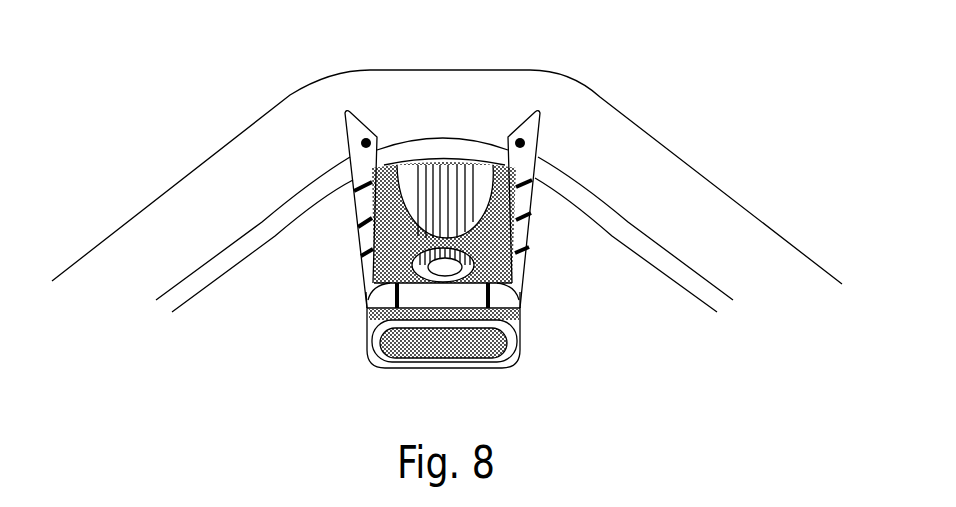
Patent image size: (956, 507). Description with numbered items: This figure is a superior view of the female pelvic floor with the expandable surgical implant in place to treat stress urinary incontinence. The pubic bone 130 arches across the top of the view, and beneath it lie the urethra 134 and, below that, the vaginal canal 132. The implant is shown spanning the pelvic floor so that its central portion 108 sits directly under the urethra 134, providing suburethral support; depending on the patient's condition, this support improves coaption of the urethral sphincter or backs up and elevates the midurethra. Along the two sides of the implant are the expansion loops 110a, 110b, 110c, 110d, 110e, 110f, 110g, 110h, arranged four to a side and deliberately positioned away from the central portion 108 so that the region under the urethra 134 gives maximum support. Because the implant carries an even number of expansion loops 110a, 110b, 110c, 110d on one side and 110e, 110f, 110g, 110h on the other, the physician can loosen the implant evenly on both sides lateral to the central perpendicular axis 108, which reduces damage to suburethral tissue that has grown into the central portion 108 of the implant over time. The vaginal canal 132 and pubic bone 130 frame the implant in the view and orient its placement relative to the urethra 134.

The pubic bone 130 is at (359, 88).
The central portion 108 is at (462, 306).
The urethra 134 is at (437, 271).
The vaginal canal 132 is at (458, 358).
The expansion loop 110a is at (355, 196).
The expansion loop 110b is at (358, 227).
The expansion loop 110c is at (362, 255).
The expansion loop 110d is at (366, 300).
The expansion loop 110e is at (523, 300).
The expansion loop 110f is at (528, 252).
The expansion loop 110g is at (531, 218).
The expansion loop 110h is at (534, 186).